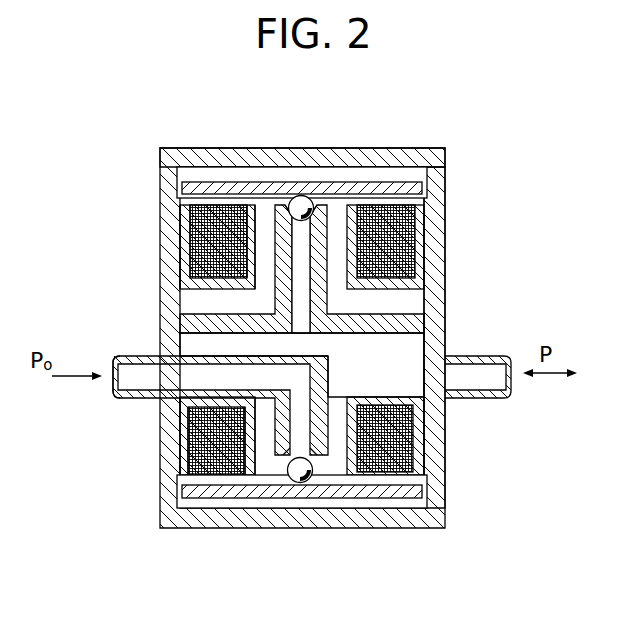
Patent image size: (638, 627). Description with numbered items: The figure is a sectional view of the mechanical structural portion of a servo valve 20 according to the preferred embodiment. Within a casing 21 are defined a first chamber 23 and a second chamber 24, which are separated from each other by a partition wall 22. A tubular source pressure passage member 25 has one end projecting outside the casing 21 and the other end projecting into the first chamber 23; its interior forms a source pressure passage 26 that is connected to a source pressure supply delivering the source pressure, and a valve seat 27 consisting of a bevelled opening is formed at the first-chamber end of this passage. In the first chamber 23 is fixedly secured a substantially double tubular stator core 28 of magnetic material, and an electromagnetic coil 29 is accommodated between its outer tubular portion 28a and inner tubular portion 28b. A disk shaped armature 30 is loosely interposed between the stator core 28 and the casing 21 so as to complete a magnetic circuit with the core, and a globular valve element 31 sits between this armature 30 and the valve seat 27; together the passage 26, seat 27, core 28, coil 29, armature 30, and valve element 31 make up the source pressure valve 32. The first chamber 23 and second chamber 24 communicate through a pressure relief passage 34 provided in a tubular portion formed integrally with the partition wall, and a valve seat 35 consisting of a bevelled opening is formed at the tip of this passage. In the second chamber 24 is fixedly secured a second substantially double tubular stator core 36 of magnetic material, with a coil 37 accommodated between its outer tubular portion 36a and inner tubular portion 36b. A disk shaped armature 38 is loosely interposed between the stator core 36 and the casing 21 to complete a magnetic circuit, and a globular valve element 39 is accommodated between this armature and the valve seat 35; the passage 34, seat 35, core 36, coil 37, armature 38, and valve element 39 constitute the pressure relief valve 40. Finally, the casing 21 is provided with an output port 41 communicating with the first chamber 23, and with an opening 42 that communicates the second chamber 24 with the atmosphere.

The servo valve 20 is at (165, 150).
The casing 21 is at (266, 150).
The partition wall 22 is at (198, 318).
The first chamber 23 is at (413, 343).
The second chamber 24 is at (447, 278).
The source pressure passage member 25 is at (140, 398).
The source pressure passage 26 is at (110, 390).
The valve seat 27 is at (286, 463).
The stator core 28 is at (420, 450).
The outer tubular portion 28a is at (186, 468).
The inner tubular portion 28b is at (245, 476).
The electromagnetic coil 29 is at (198, 477).
The armature 30 is at (398, 492).
The valve element 31 is at (311, 472).
The source pressure valve 32 is at (304, 483).
The pressure relief passage 34 is at (293, 262).
The valve seat 35 is at (313, 198).
The stator core 36 is at (182, 225).
The outer tubular portion 36a is at (187, 205).
The inner tubular portion 36b is at (249, 205).
The coil 37 is at (214, 205).
The armature 38 is at (410, 188).
The valve element 39 is at (300, 197).
The pressure relief valve 40 is at (315, 172).
The output port 41 is at (507, 380).
The opening 42 is at (424, 294).